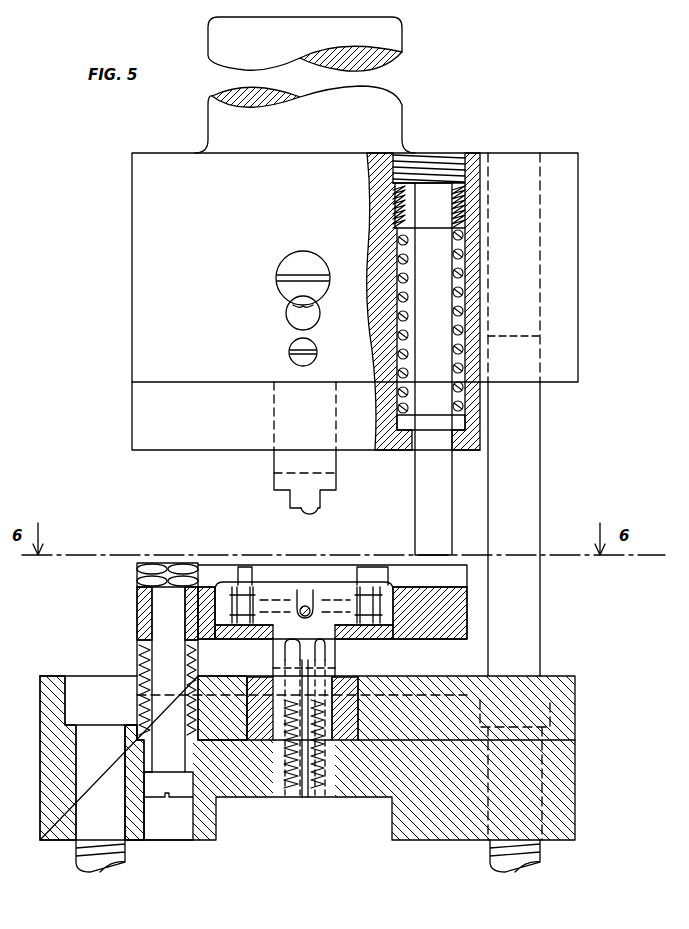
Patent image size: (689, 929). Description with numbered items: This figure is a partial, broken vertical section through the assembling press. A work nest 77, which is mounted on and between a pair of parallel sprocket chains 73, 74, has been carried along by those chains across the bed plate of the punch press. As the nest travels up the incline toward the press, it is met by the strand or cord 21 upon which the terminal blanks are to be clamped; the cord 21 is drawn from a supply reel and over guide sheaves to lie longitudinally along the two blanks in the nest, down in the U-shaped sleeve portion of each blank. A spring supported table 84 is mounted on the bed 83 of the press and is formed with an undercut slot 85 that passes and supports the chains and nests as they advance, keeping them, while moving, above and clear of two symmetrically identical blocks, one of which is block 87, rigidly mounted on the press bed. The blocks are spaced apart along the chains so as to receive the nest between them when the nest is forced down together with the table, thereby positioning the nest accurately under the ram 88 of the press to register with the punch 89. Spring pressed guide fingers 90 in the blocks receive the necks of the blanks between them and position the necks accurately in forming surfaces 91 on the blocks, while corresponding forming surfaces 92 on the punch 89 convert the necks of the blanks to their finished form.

The cord 21 is at (303, 592).
The sprocket chain 73 is at (362, 585).
The sprocket chain 74 is at (245, 583).
The work nest 77 is at (282, 592).
The bed 83 is at (378, 800).
The spring supported table 84 is at (415, 639).
The undercut slot 85 is at (218, 599).
The block 87 is at (332, 673).
The ram 88 is at (180, 445).
The punch 89 is at (274, 467).
The spring pressed guide finger 90 is at (333, 660).
The forming surface 91 is at (286, 650).
The forming surface 92 is at (323, 516).